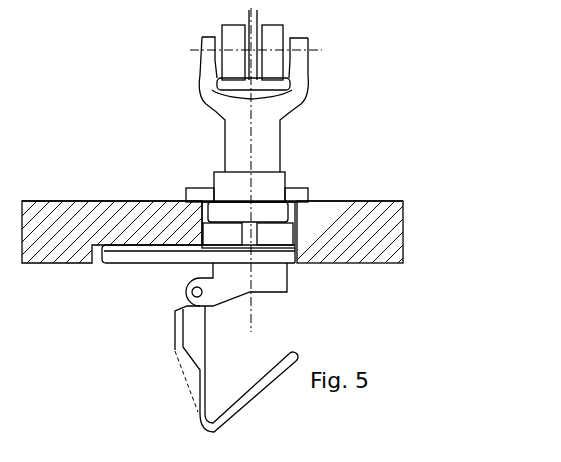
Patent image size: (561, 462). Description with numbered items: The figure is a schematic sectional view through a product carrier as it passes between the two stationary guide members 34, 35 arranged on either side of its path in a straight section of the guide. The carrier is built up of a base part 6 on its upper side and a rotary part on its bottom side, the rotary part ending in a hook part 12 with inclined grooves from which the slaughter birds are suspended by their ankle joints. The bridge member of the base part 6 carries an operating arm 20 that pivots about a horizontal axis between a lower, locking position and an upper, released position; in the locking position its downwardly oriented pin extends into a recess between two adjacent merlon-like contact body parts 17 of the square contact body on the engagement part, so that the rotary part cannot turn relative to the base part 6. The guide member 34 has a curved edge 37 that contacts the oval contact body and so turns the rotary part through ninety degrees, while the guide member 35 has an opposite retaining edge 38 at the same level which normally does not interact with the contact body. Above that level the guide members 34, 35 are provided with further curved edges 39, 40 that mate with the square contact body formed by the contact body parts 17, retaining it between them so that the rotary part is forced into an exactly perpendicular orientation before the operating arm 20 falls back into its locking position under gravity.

The base part 6 is at (332, 87).
The operating arm 20 is at (188, 190).
The further curved edge 40 is at (190, 188).
The further curved edge 39 is at (293, 188).
The contact body part 17 is at (217, 237).
The guide member 34 is at (400, 231).
The guide member 35 is at (45, 263).
The retaining edge 38 is at (96, 263).
The curved edge 37 is at (302, 250).
The hook part 12 is at (195, 393).